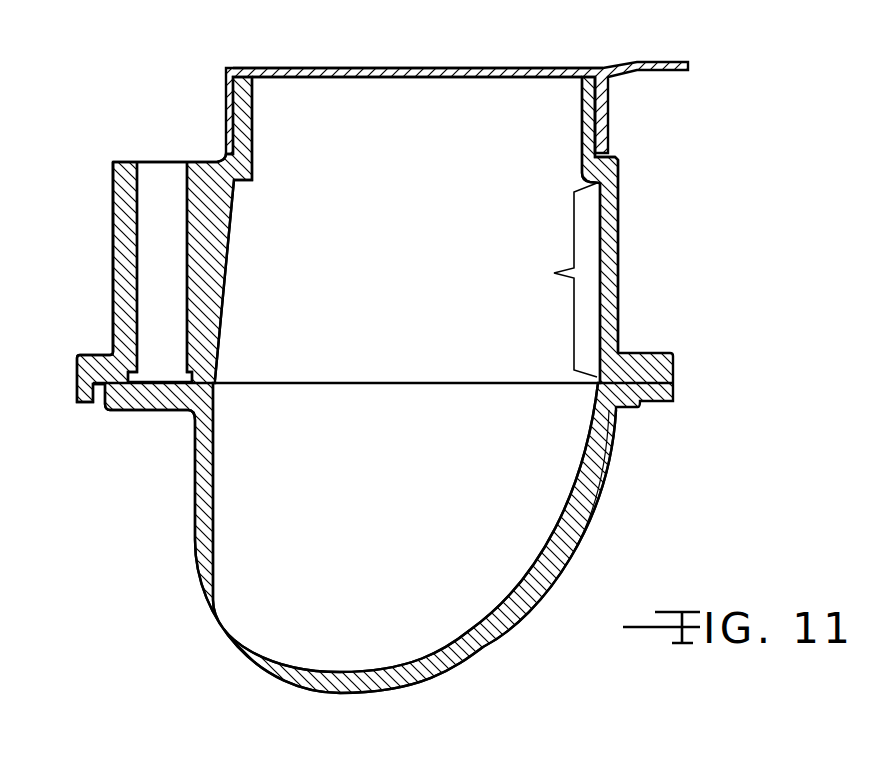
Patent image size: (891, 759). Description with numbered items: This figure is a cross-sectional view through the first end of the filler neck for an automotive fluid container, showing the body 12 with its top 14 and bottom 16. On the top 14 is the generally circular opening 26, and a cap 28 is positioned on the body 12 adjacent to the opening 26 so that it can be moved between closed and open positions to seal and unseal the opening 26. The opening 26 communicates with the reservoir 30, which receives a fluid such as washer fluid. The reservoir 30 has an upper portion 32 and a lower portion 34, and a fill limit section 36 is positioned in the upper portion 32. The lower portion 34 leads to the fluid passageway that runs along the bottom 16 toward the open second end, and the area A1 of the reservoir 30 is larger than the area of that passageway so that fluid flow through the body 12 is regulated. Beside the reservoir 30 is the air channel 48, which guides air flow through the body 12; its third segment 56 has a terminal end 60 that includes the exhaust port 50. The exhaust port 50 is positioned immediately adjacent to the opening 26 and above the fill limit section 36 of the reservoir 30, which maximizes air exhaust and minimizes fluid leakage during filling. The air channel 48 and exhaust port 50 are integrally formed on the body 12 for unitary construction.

The body 12 is at (618, 172).
The top 14 is at (249, 68).
The bottom 16 is at (357, 692).
The opening 26 is at (517, 97).
The cap 28 is at (382, 68).
The reservoir 30 is at (612, 447).
The upper portion 32 is at (620, 282).
The lower portion 34 is at (583, 543).
The fill limit section 36 is at (558, 280).
The air channel 48 is at (110, 250).
The exhaust port 50 is at (167, 173).
The third segment 56 is at (110, 292).
The terminal end 60 is at (128, 160).
The area of the reservoir A1 is at (232, 488).